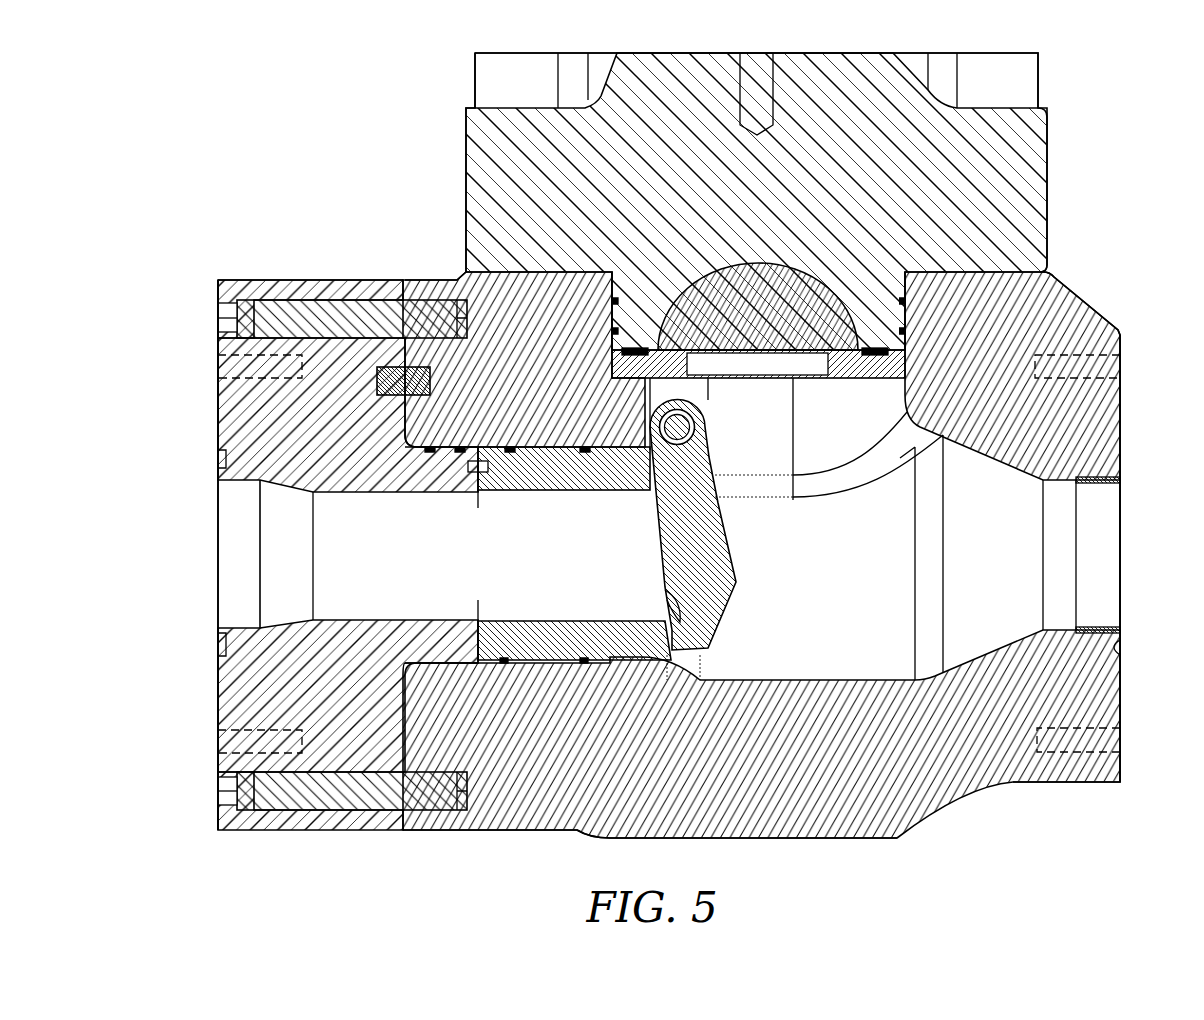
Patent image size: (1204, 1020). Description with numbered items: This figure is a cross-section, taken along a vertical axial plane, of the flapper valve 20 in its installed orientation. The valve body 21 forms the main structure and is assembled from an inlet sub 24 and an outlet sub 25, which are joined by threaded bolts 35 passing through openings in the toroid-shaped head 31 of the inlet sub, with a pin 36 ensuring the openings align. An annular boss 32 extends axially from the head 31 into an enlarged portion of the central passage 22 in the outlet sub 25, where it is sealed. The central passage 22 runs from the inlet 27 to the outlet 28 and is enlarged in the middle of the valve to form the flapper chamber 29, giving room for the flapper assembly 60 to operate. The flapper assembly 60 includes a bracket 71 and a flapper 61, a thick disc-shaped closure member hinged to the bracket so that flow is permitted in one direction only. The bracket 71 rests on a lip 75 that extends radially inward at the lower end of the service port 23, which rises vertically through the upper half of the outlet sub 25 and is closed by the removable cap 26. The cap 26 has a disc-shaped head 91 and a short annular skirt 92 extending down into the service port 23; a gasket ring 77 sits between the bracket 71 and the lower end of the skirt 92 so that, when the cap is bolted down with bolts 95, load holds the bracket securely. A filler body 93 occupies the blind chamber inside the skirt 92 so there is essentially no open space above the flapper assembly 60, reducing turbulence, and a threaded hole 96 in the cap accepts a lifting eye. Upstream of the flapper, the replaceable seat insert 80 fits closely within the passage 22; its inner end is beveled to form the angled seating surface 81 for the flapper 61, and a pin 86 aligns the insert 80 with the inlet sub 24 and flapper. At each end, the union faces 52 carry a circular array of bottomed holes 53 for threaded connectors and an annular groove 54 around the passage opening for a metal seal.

The flapper valve 20 is at (251, 138).
The valve body 21 is at (957, 802).
The central passage 22 is at (349, 568).
The service port 23 is at (760, 418).
The inlet sub 24 is at (325, 815).
The outlet sub 25 is at (556, 828).
The cap 26 is at (466, 148).
The inlet 27 is at (236, 560).
The outlet 28 is at (1105, 548).
The flapper chamber 29 is at (860, 578).
The head 31 is at (362, 415).
The annular boss 32 is at (440, 482).
The threaded bolts 35 is at (275, 800).
The pin 36 is at (413, 368).
The union faces 52 is at (217, 430).
The holes 53 is at (1083, 364).
The annular groove 54 is at (226, 460).
The flapper assembly 60 is at (714, 441).
The flapper 61 is at (716, 592).
The bracket 71 is at (858, 380).
The lip 75 is at (612, 361).
The gasket ring 77 is at (632, 347).
The seat insert 80 is at (607, 625).
The seating surface 81 is at (662, 598).
The pin 86 is at (484, 476).
The head 91 is at (1018, 166).
The skirt 92 is at (893, 332).
The filler body 93 is at (820, 292).
The bolts 95 is at (480, 67).
The threaded hole 96 is at (768, 70).